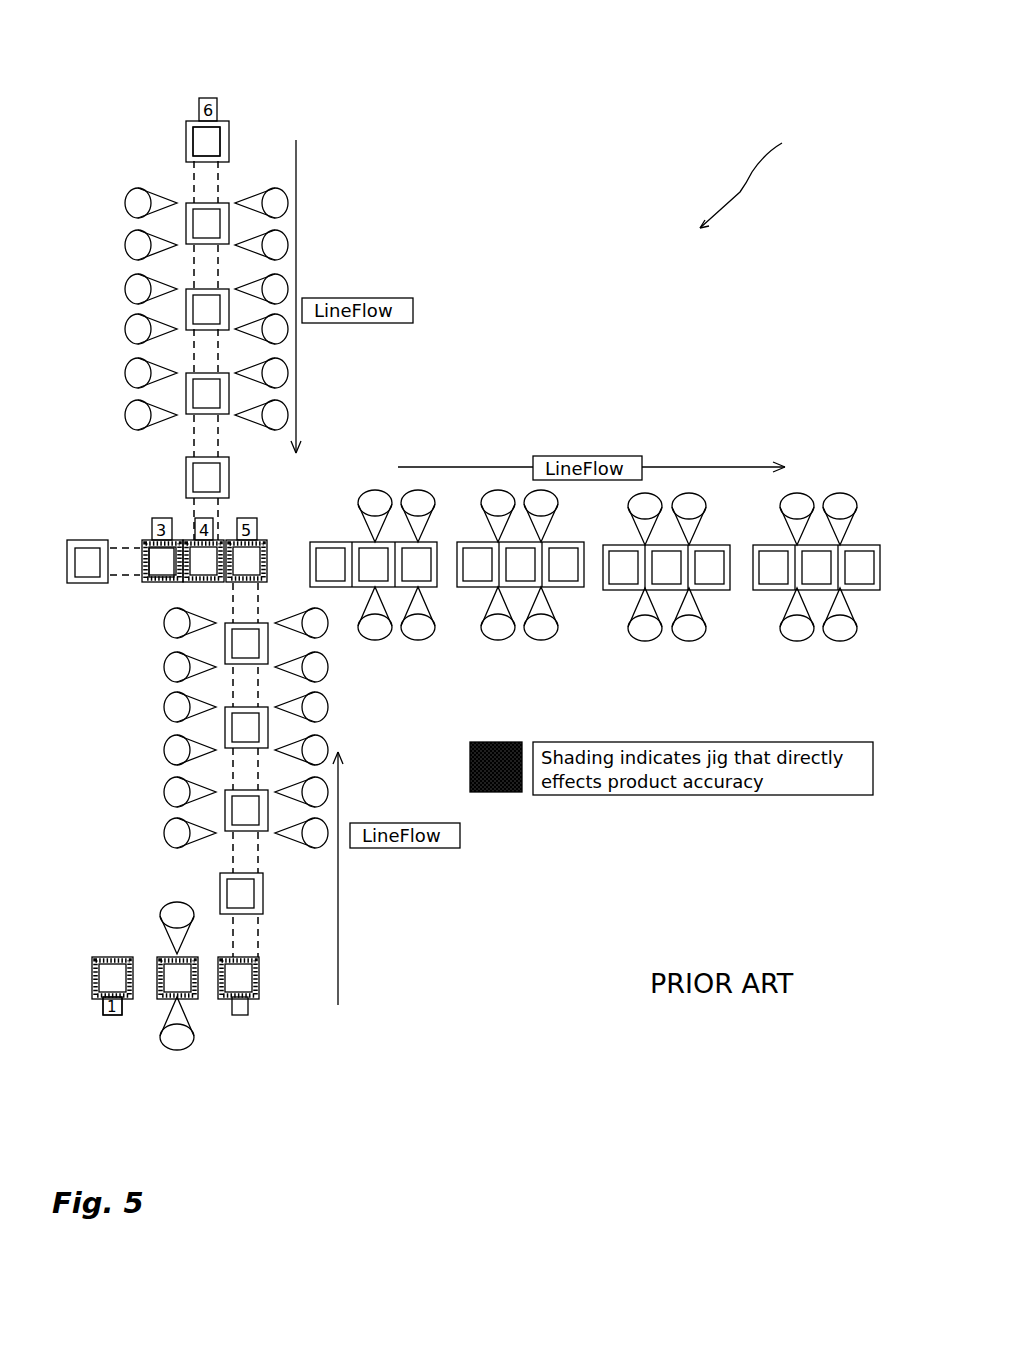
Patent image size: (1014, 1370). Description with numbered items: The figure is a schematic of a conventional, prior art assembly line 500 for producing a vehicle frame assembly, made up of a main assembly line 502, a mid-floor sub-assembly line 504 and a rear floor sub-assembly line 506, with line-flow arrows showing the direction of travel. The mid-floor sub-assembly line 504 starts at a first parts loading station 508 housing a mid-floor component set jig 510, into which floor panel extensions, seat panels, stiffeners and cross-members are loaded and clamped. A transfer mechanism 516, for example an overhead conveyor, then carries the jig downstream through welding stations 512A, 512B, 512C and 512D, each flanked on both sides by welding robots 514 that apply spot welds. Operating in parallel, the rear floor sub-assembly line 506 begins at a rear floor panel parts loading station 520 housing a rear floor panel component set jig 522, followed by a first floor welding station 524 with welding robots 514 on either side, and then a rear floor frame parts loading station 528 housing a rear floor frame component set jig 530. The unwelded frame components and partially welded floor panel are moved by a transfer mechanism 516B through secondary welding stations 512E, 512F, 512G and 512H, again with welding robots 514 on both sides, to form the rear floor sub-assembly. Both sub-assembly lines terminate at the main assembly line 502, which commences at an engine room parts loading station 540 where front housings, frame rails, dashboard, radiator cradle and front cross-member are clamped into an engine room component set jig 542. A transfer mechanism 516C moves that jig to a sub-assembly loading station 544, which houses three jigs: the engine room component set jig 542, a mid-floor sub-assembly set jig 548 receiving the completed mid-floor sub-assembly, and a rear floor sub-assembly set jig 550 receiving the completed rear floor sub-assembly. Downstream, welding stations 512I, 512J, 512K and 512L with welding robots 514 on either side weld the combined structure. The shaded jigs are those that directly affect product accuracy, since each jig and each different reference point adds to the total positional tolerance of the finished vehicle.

The assembly line 500 is at (759, 175).
The main assembly line 502 is at (780, 425).
The mid-floor sub-assembly line 504 is at (125, 85).
The rear floor sub-assembly line 506 is at (135, 773).
The first parts loading station 508 is at (137, 127).
The mid-floor component set jig 510 is at (200, 148).
The welding station 512A is at (186, 224).
The welding station 512B is at (186, 310).
The welding station 512C is at (186, 395).
The welding station 512D is at (186, 475).
The secondary welding station 512E is at (220, 892).
The secondary welding station 512F is at (225, 810).
The secondary welding station 512G is at (225, 730).
The secondary welding station 512H is at (225, 645).
The welding station 512I is at (435, 587).
The welding station 512J is at (575, 587).
The welding station 512K is at (725, 592).
The welding station 512L is at (818, 592).
The welding robots 514 is at (124, 203).
The transfer mechanism 516 is at (193, 180).
The transfer mechanism 516B is at (258, 937).
The transfer mechanism 516C is at (132, 550).
The rear floor panel parts loading station 520 is at (92, 997).
The rear floor panel component set jig 522 is at (104, 1000).
The first floor welding station 524 is at (190, 997).
The rear floor frame parts loading station 528 is at (255, 999).
The rear floor frame component set jig 530 is at (259, 980).
The engine room parts loading station 540 is at (100, 571).
The engine room component set jig 542 is at (148, 585).
The sub-assembly loading station 544 is at (148, 542).
The mid-floor sub-assembly set jig 548 is at (220, 542).
The rear floor sub-assembly set jig 550 is at (260, 538).